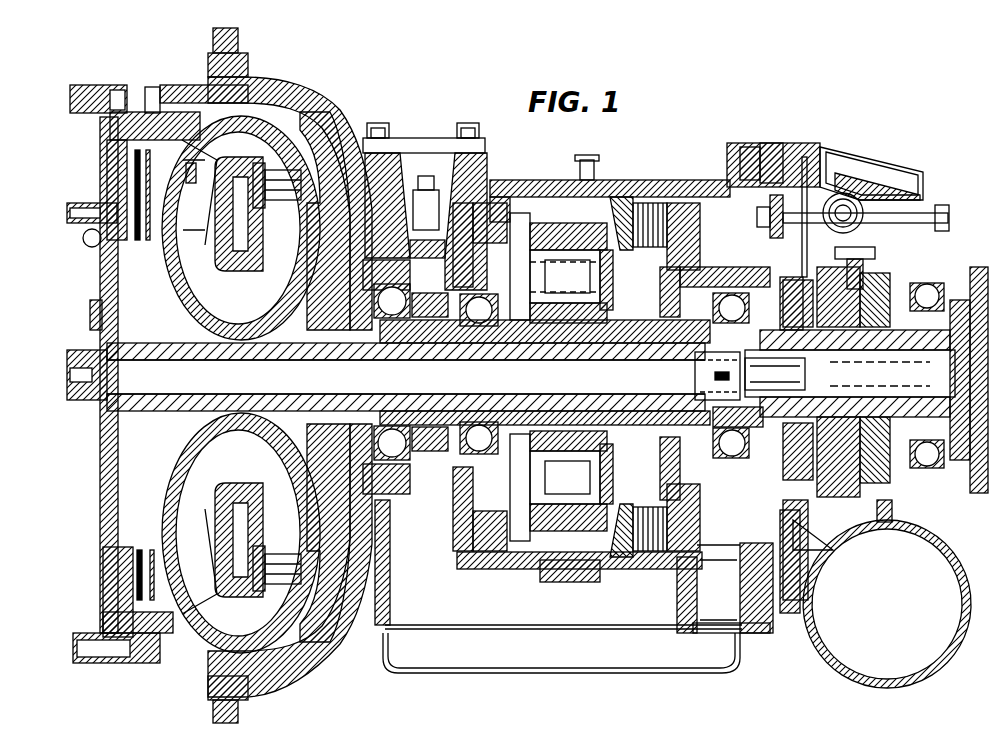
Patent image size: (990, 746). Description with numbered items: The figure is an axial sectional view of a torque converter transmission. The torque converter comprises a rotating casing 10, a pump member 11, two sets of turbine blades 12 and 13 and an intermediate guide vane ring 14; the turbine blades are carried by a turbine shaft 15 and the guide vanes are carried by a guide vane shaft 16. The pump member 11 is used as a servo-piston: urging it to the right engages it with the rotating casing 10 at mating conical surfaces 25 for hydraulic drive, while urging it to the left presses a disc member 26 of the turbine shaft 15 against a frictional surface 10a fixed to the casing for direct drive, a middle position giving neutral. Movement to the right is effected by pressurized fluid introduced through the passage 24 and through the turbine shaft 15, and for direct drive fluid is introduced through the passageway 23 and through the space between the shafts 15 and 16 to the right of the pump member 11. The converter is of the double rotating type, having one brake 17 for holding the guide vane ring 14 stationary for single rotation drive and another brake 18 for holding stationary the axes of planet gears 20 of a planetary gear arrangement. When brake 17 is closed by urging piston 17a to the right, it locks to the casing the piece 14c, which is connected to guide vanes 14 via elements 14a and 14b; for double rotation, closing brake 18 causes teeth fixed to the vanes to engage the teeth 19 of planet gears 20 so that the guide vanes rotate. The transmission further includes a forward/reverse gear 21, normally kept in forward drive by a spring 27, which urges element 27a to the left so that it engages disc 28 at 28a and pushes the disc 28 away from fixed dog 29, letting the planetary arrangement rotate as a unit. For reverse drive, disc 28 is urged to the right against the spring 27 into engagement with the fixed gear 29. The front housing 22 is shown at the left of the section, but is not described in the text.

The rotating casing 10 is at (140, 118).
The frictional surface 10a is at (143, 558).
The pump member 11 is at (206, 202).
The turbine blades 12 is at (288, 162).
The turbine blades 13 is at (258, 276).
The intermediate guide vane ring 14 is at (255, 158).
The element 14a is at (337, 132).
The element 14b is at (401, 335).
The piece 14c is at (497, 314).
The turbine shaft 15 is at (243, 347).
The guide vane shaft 16 is at (353, 337).
The brake 17 is at (524, 188).
The piston 17a is at (491, 207).
The brake 18 is at (653, 196).
The teeth 19 is at (552, 258).
The planet gears 20 is at (584, 250).
The forward/reverse gear 21 is at (797, 278).
The front housing 22 is at (103, 298).
The passageway 23 is at (635, 352).
The passage 24 is at (690, 356).
The mating conical surfaces 25 is at (196, 172).
The disc member 26 is at (95, 173).
The spring 27 is at (905, 347).
The element 27a is at (865, 347).
The disc 28 is at (850, 258).
The engagement location 28a is at (845, 472).
The fixed dog 29 is at (850, 236).